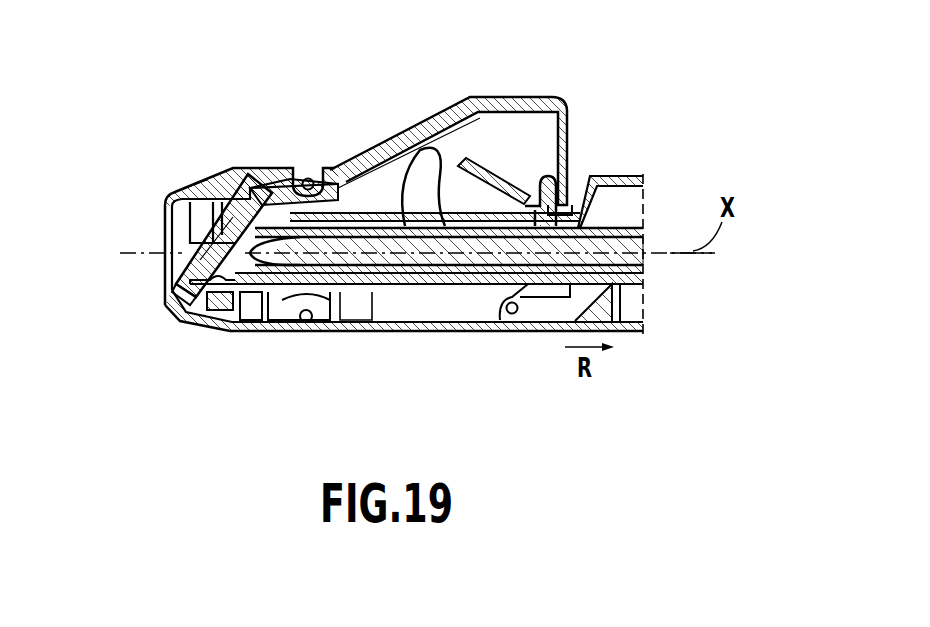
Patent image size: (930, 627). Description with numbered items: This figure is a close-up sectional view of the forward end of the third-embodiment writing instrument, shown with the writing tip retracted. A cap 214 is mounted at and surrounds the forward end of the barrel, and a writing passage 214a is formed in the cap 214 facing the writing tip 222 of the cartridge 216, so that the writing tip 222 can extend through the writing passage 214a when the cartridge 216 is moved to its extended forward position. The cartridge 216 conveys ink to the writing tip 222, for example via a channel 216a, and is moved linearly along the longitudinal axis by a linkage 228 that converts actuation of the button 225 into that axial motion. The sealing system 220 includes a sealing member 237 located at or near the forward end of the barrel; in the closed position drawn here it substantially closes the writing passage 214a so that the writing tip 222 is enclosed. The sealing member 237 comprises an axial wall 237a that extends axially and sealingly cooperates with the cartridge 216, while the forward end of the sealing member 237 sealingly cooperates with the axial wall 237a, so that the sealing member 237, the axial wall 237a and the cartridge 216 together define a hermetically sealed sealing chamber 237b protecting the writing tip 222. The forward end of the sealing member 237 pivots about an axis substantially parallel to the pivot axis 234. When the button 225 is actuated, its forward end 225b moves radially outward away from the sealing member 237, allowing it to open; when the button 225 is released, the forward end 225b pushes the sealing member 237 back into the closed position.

The cap 214 is at (250, 342).
The writing passage 214a is at (160, 227).
The cartridge 216 is at (620, 230).
The channel 216a is at (630, 257).
The sealing system 220 is at (181, 124).
The writing tip 222 is at (257, 262).
The button 225 is at (486, 92).
The forward end of the button 225b is at (261, 188).
The linkage 228 is at (544, 182).
The pivot axis 234 is at (309, 176).
The sealing member 237 is at (188, 262).
The axial wall 237a is at (186, 293).
The sealing chamber 237b is at (188, 257).